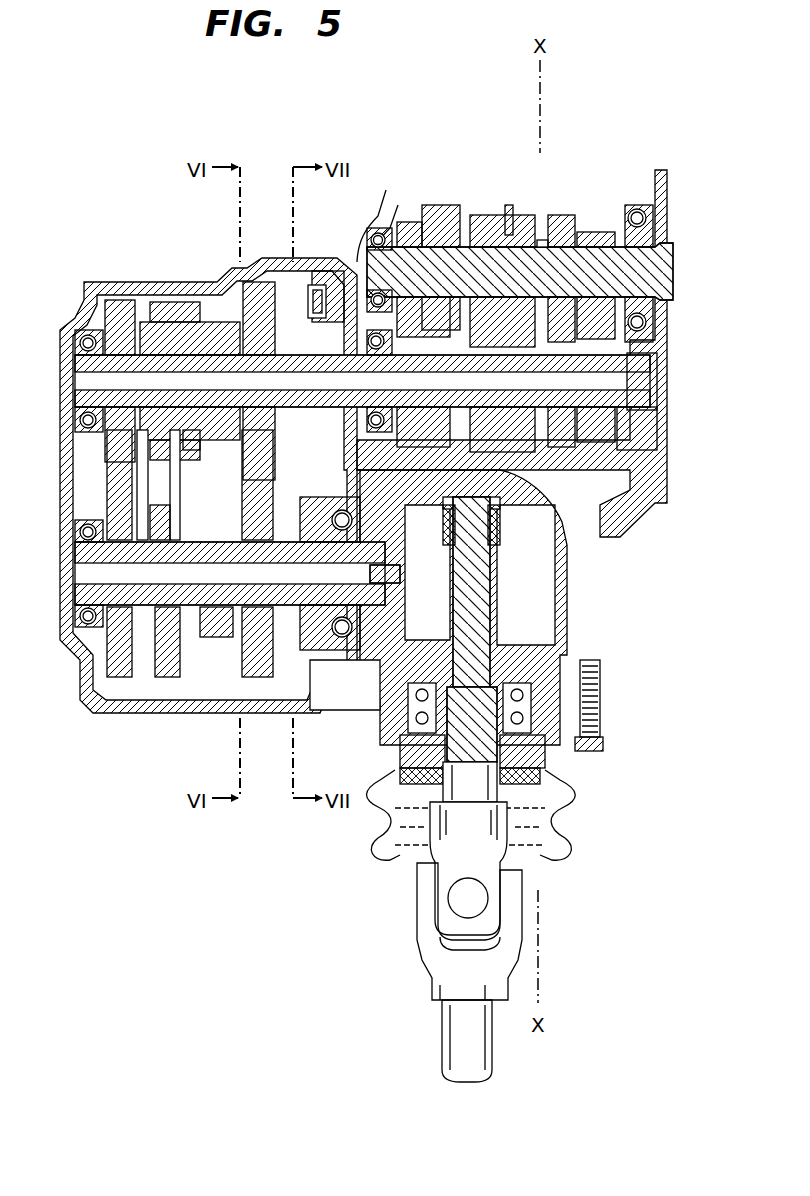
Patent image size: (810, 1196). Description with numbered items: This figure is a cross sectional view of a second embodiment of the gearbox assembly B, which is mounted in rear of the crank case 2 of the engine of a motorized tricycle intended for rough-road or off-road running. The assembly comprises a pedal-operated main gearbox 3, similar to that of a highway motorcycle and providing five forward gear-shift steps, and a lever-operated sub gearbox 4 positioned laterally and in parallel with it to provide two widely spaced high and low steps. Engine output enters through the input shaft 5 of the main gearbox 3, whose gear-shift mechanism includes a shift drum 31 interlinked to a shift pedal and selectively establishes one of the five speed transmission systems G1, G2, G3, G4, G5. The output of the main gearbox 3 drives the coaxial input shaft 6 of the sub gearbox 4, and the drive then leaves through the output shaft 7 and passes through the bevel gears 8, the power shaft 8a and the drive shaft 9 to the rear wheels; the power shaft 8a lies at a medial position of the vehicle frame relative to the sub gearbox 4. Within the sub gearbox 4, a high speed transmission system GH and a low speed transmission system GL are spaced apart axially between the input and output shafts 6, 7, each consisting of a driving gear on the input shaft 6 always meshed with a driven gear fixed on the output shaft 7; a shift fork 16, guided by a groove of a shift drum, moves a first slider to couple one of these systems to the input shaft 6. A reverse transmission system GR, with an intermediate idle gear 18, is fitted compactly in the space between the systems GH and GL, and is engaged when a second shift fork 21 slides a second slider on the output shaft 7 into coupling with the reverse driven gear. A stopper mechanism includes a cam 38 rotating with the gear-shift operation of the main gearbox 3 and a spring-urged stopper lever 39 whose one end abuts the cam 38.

The crank case 2 is at (385, 205).
The main gearbox 3 is at (545, 190).
The sub gearbox 4 is at (188, 280).
The input shaft 5 is at (668, 272).
The input shaft 6 is at (333, 360).
The output shaft 7 is at (84, 598).
The bevel gears 8 is at (537, 628).
The power shaft 8a is at (480, 780).
The drive shaft 9 is at (453, 1040).
The shift fork 16 is at (190, 444).
The intermediate idle gear 18 is at (178, 467).
The second shift fork 21 is at (222, 640).
The shift drum 31 is at (510, 212).
The cam 38 is at (318, 285).
The stopper lever 39 is at (312, 305).
The gearbox assembly B is at (470, 160).
The speed transmission system G1 is at (590, 230).
The speed transmission system G2 is at (409, 218).
The speed transmission system G3 is at (488, 213).
The speed transmission system G4 is at (563, 207).
The speed transmission system G5 is at (440, 206).
The high speed transmission system GH is at (266, 276).
The low speed transmission system GL is at (117, 296).
The reverse transmission system GR is at (160, 300).